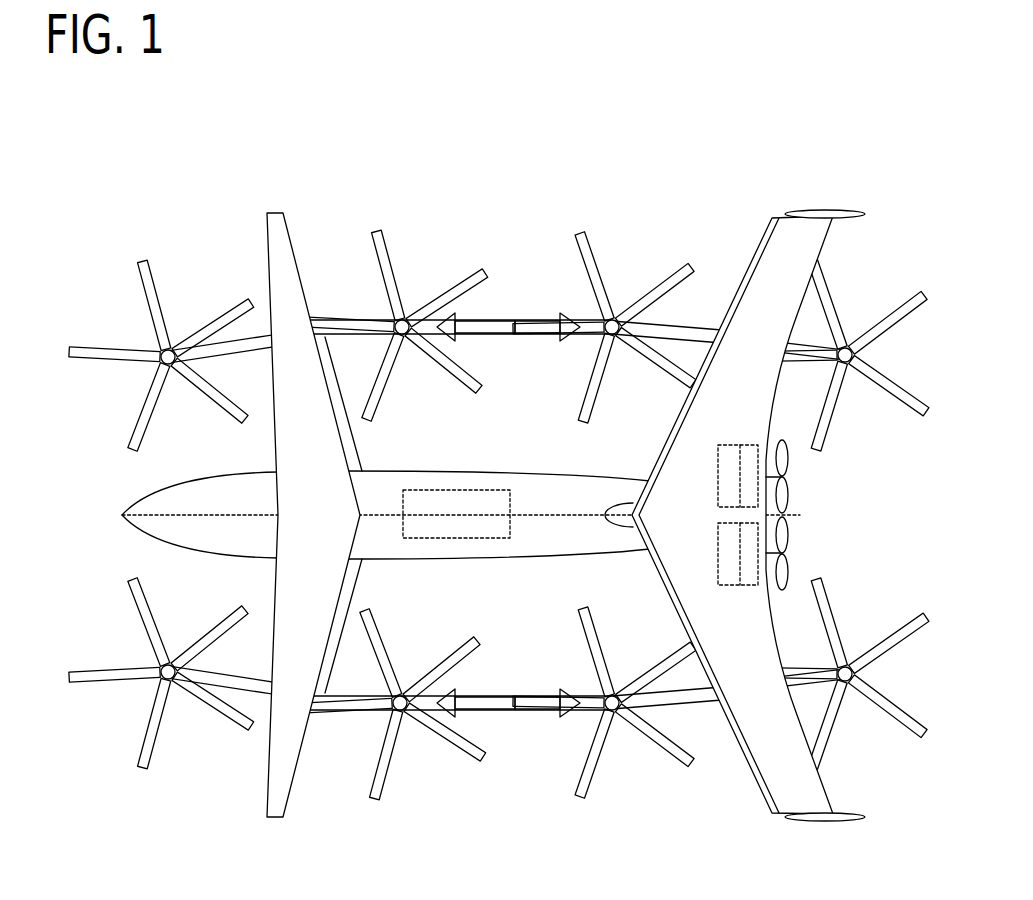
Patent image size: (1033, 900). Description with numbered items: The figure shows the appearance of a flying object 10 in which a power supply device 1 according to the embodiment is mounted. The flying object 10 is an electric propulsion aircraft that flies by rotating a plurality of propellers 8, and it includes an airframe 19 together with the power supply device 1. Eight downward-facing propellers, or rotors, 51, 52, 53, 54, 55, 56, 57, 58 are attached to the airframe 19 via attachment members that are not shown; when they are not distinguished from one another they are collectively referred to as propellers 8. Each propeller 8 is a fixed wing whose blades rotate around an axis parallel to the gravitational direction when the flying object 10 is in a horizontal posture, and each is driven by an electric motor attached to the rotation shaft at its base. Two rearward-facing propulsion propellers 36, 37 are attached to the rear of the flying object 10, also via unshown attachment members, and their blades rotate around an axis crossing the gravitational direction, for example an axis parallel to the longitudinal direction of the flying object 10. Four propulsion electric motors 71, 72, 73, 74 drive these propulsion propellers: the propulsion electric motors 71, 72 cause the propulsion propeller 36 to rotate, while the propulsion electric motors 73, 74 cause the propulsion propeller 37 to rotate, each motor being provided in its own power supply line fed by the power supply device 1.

The power supply device 1 is at (485, 489).
The propeller 8 is at (76, 338).
The flying object 10 is at (714, 194).
The airframe 19 is at (137, 498).
The propulsion propeller 36 is at (788, 573).
The propulsion propeller 37 is at (788, 457).
The propeller 51 is at (155, 743).
The propeller 52 is at (153, 287).
The propeller 53 is at (390, 767).
The propeller 54 is at (392, 263).
The propeller 55 is at (592, 767).
The propeller 56 is at (596, 263).
The propeller 57 is at (897, 722).
The propeller 58 is at (897, 306).
The propulsion electric motor 71 is at (748, 585).
The propulsion electric motor 72 is at (718, 553).
The propulsion electric motor 73 is at (747, 445).
The propulsion electric motor 74 is at (718, 480).